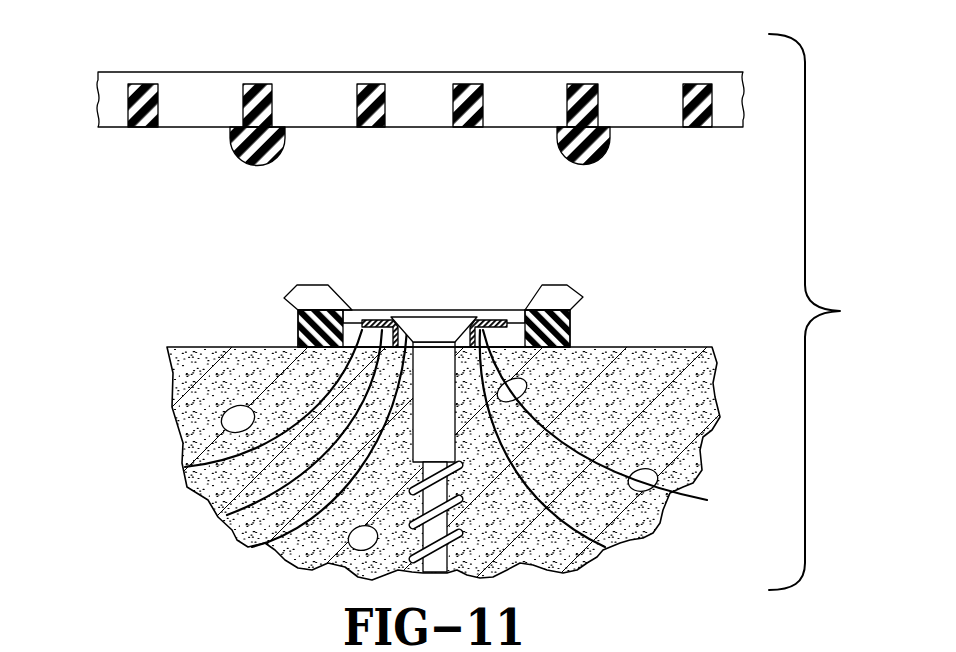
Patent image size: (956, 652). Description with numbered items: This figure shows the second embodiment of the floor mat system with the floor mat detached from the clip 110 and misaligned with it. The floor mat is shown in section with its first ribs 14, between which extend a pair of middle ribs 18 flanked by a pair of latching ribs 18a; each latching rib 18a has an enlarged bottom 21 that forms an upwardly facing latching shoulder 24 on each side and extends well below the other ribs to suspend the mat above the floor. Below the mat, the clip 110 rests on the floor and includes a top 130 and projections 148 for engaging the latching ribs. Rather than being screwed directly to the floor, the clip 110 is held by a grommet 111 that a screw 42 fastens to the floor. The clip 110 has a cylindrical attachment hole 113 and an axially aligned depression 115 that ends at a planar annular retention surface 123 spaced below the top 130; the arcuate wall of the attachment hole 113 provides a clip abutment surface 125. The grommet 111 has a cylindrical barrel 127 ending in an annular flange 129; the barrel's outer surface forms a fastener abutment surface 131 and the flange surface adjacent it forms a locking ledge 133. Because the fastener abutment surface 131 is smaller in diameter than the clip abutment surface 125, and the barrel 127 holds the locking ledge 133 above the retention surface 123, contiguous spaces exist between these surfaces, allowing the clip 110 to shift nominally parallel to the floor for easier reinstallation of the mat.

The first ribs 14 is at (651, 73).
The middle ribs 18 is at (146, 88).
The latching ribs 18a is at (257, 88).
The enlarged bottom 21 is at (258, 160).
The latching shoulder 24 is at (408, 121).
The screw 42 is at (429, 330).
The clip 110 is at (463, 276).
The grommet 111 is at (376, 322).
The attachment hole 113 is at (227, 515).
The depression 115 is at (514, 319).
The retention surface 123 is at (360, 347).
The clip abutment surface 125 is at (707, 500).
The barrel 127 is at (252, 547).
The flange 129 is at (481, 326).
The top 130 is at (446, 310).
The fastener abutment surface 131 is at (605, 547).
The locking ledge 133 is at (185, 467).
The projections 148 is at (313, 290).